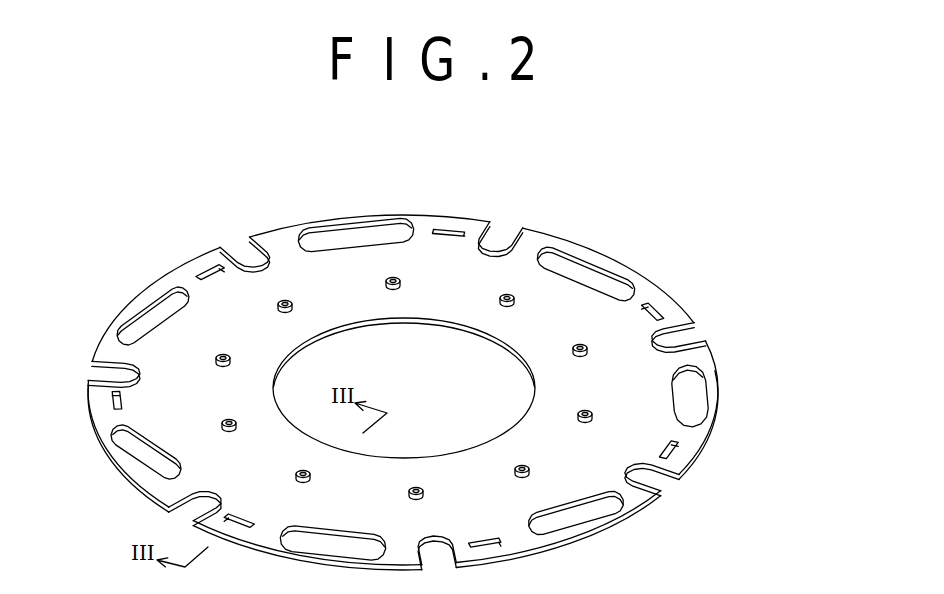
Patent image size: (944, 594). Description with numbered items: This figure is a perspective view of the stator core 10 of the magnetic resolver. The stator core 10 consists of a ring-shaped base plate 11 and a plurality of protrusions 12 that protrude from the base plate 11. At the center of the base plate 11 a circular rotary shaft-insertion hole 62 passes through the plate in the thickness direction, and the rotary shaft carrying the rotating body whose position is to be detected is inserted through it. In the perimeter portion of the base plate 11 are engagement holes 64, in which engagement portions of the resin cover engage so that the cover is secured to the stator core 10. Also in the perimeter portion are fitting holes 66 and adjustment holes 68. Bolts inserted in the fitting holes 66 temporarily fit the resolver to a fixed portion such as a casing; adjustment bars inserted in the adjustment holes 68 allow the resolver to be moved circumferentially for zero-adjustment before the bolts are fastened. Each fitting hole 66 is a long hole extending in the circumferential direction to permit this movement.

The stator core 10 is at (660, 194).
The base plate 11 is at (662, 330).
The protrusions 12 is at (578, 345).
The rotary shaft-insertion hole 62 is at (472, 357).
The engagement holes 64 is at (680, 443).
The fitting holes 66 is at (690, 393).
The adjustment holes 68 is at (683, 340).